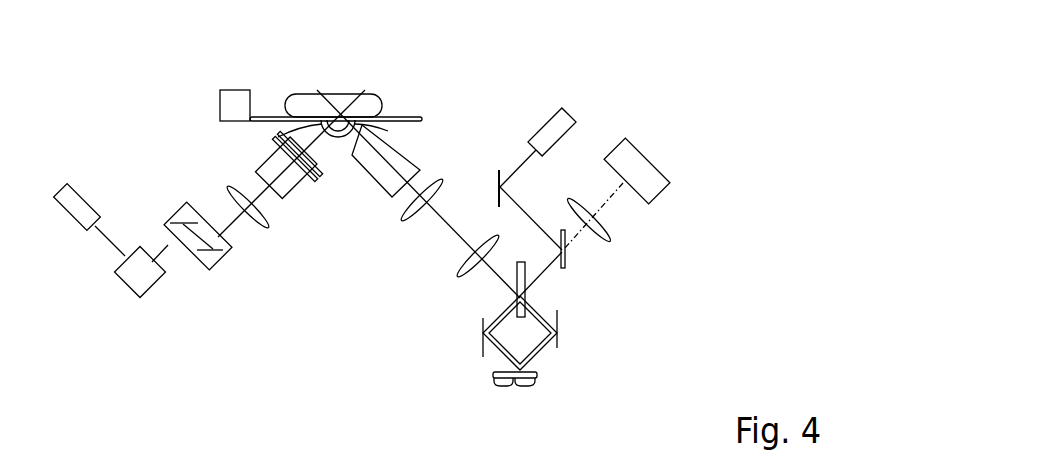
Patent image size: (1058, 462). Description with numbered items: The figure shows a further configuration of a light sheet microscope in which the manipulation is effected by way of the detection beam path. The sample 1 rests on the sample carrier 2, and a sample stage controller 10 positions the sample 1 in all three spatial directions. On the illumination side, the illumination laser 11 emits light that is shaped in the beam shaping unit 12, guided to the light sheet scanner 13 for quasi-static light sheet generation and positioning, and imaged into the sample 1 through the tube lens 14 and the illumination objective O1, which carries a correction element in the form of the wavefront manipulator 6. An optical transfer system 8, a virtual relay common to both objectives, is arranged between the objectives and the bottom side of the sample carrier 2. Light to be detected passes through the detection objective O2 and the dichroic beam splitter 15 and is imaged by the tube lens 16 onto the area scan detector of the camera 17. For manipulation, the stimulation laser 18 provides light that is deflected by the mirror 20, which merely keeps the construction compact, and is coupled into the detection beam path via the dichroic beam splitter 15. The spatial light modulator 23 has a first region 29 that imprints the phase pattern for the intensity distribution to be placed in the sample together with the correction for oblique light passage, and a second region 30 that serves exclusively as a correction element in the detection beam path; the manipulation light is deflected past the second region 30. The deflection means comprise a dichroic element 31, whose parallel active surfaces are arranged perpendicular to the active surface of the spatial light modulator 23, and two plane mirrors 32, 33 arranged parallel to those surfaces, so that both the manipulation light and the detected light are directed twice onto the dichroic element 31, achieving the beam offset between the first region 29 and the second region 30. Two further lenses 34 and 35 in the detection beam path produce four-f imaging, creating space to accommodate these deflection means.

The sample 1 is at (372, 94).
The sample carrier 2 is at (414, 117).
The wavefront manipulator 6 is at (270, 141).
The optical transfer system 8 is at (338, 137).
The sample stage controller 10 is at (222, 90).
The illumination laser 11 is at (73, 183).
The beam shaping unit 12 is at (147, 287).
The light sheet scanner 13 is at (182, 207).
The tube lens 14 is at (258, 230).
The dichroic beam splitter 15 is at (567, 257).
The tube lens 16 is at (410, 217).
The camera 17 is at (642, 162).
The stimulation laser 18 is at (568, 107).
The mirror 20 is at (500, 170).
The spatial light modulator 23 is at (537, 375).
The first region 29 is at (503, 387).
The second region 30 is at (525, 387).
The dichroic element 31 is at (527, 280).
The plane mirror 32 is at (483, 325).
The plane mirror 33 is at (560, 330).
The lens 34 is at (458, 278).
The lens 35 is at (606, 232).
The illumination objective O1 is at (290, 183).
The detection objective O2 is at (402, 158).